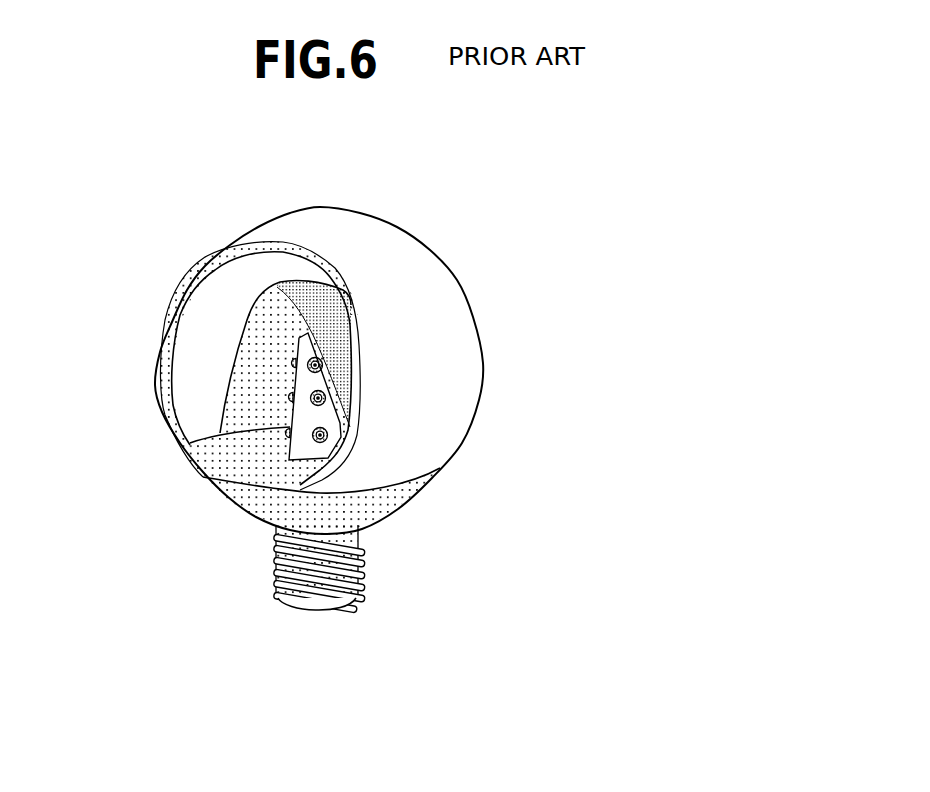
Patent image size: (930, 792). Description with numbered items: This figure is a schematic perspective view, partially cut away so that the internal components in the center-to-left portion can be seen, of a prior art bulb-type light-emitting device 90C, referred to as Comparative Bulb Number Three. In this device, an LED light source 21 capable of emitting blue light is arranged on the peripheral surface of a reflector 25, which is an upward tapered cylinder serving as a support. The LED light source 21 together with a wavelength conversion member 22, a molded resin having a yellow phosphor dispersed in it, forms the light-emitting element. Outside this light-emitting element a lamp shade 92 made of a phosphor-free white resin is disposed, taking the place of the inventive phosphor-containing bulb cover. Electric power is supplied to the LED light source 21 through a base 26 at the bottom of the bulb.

The light-emitting device 90C is at (211, 173).
The lamp shade 92 is at (450, 287).
The wavelength conversion member 22 is at (240, 337).
The LED light source 21 is at (290, 398).
The reflector 25 is at (293, 452).
The base 26 is at (321, 612).